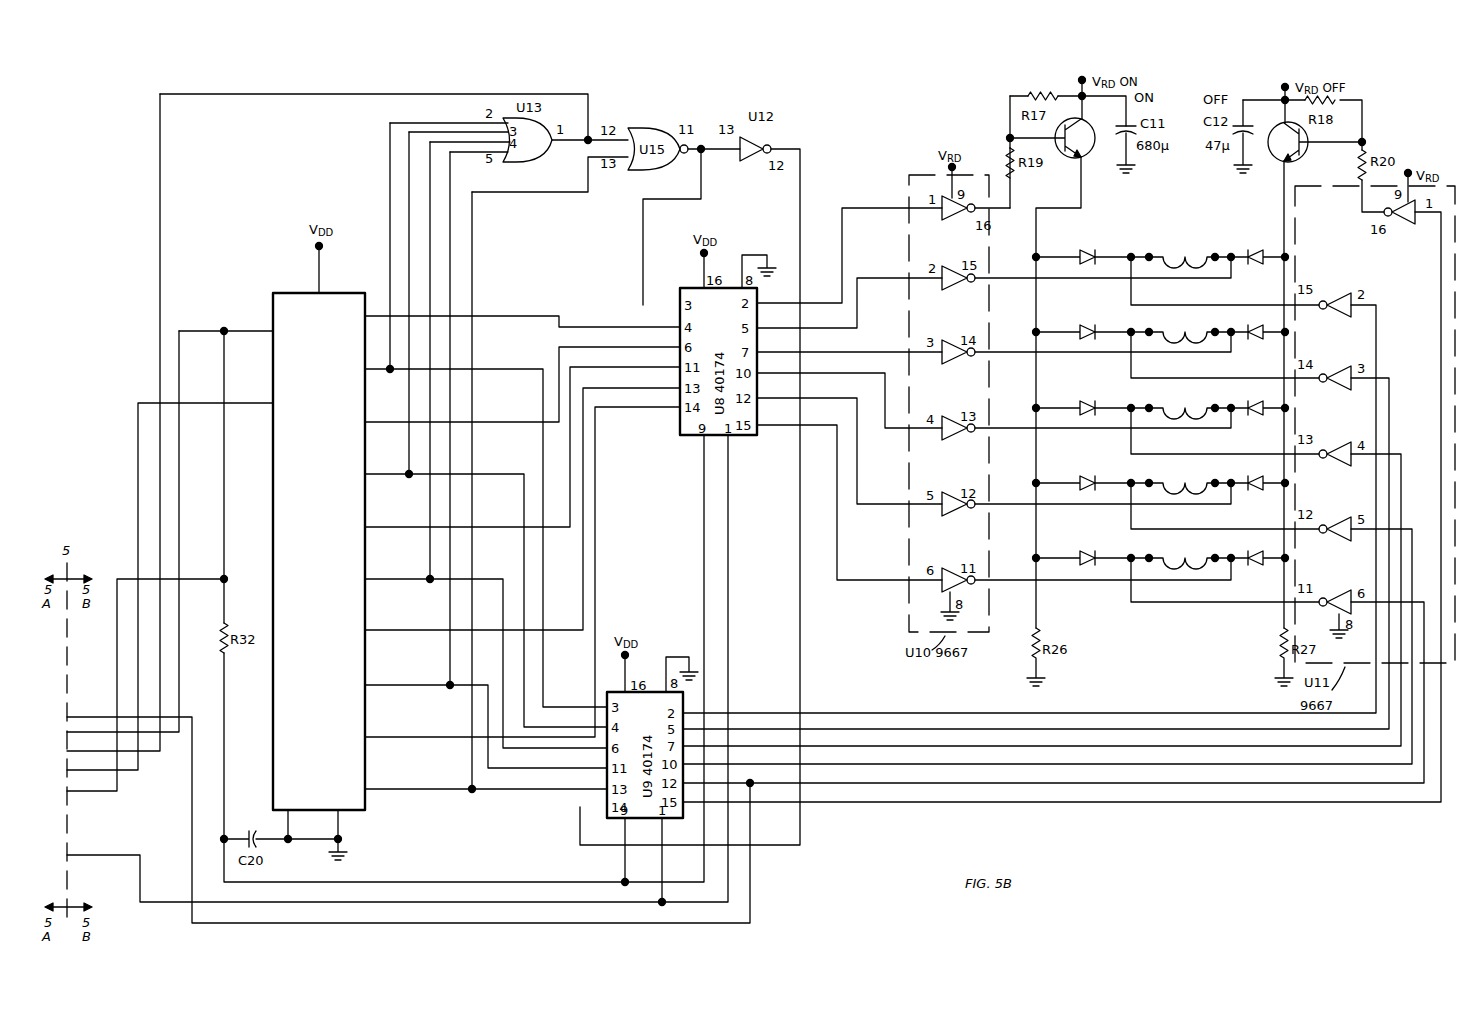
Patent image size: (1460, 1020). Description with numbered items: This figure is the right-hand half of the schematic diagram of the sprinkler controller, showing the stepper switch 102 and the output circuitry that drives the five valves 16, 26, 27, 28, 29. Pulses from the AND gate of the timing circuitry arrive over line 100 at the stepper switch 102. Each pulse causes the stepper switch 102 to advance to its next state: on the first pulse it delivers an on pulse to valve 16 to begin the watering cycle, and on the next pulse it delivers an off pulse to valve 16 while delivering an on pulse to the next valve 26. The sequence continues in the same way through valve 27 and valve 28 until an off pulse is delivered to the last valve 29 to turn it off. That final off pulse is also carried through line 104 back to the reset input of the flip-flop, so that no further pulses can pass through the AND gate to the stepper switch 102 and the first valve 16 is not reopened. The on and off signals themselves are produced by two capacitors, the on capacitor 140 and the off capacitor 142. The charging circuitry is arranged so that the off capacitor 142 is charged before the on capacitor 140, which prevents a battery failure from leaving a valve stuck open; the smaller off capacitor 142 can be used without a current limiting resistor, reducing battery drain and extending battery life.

The valve 16 is at (1180, 252).
The valve 26 is at (1178, 334).
The valve 27 is at (1176, 409).
The valve 28 is at (1176, 484).
The valve 29 is at (1176, 559).
The line 100 is at (197, 331).
The stepper switch 102 is at (270, 292).
The line 104 is at (92, 717).
The on capacitor 140 is at (1108, 140).
The off capacitor 142 is at (1248, 150).